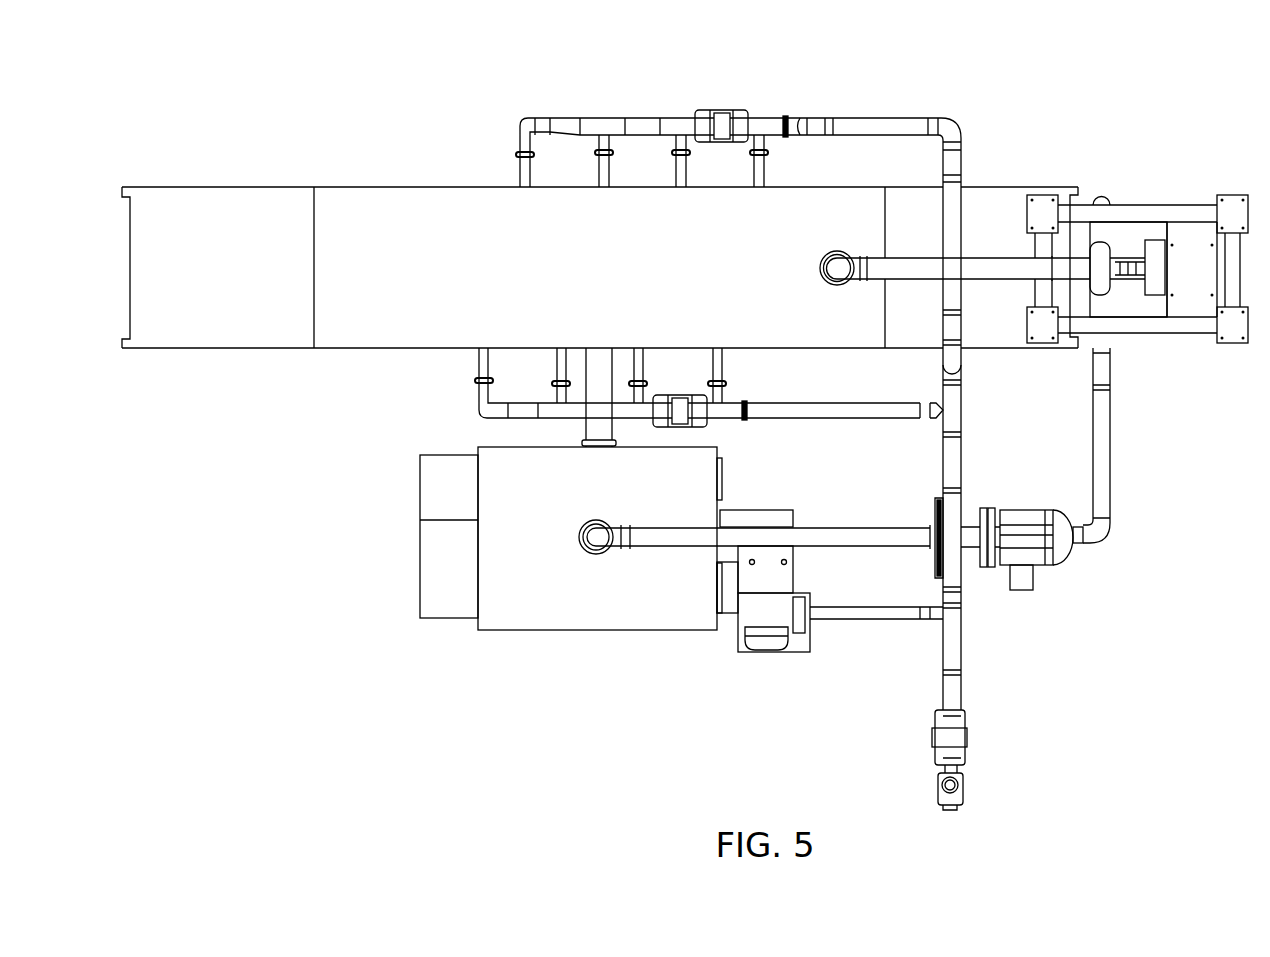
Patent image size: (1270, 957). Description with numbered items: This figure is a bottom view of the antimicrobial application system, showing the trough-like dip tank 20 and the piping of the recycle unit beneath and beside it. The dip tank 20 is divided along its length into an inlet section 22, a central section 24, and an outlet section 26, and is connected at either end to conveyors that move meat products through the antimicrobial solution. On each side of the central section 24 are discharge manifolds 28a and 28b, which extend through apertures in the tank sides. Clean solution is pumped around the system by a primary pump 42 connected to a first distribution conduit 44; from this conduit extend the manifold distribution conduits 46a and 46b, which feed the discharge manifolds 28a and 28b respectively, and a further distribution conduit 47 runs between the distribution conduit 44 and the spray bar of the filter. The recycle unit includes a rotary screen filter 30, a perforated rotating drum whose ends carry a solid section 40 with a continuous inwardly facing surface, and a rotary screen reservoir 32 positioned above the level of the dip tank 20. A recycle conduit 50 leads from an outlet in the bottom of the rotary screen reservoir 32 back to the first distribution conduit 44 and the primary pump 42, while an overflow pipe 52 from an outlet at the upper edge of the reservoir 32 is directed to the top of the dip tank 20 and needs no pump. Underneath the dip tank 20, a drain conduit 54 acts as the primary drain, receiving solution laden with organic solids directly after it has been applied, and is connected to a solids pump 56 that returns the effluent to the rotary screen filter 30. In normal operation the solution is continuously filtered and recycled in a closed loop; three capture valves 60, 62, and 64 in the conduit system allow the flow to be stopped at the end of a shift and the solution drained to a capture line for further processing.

The dip tank 20 is at (452, 258).
The inlet section 22 is at (239, 182).
The central section 24 is at (383, 201).
The outlet section 26 is at (1007, 201).
The discharge manifold 28a is at (516, 152).
The discharge manifold 28b is at (476, 380).
The rotary screen filter 30 is at (434, 455).
The rotary screen reservoir 32 is at (580, 589).
The solid section 40 is at (444, 600).
The primary pump 42 is at (1057, 567).
The first distribution conduit 44 is at (961, 459).
The manifold distribution conduit 46a is at (855, 118).
The manifold distribution conduit 46b is at (866, 418).
The further distribution conduit 47 is at (855, 622).
The recycle conduit 50 is at (817, 527).
The overflow pipe 52 is at (586, 426).
The drain conduit 54 is at (992, 268).
The solids pump 56 is at (1195, 230).
The capture valve 60 is at (967, 738).
The capture valve 62 is at (722, 110).
The capture valve 64 is at (678, 395).